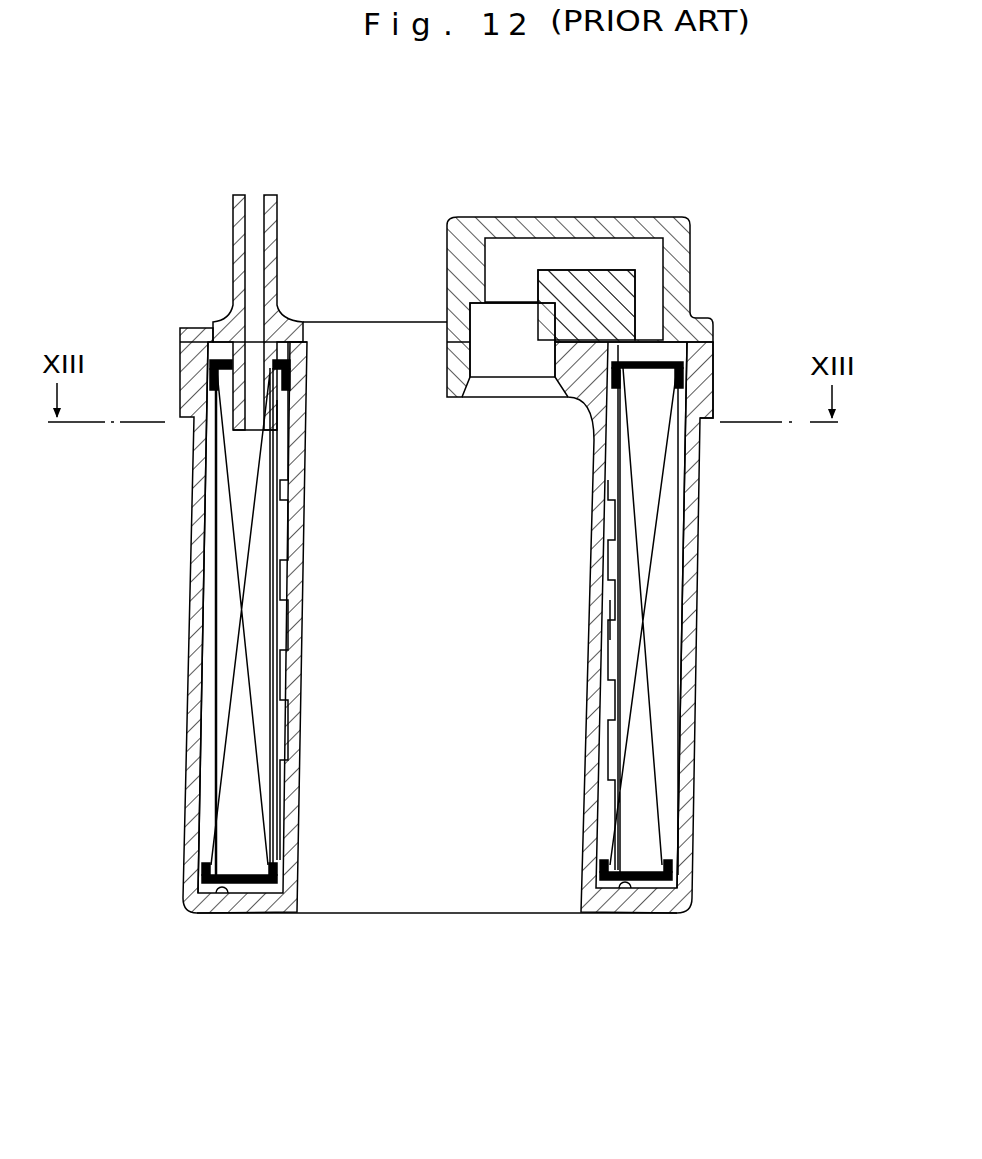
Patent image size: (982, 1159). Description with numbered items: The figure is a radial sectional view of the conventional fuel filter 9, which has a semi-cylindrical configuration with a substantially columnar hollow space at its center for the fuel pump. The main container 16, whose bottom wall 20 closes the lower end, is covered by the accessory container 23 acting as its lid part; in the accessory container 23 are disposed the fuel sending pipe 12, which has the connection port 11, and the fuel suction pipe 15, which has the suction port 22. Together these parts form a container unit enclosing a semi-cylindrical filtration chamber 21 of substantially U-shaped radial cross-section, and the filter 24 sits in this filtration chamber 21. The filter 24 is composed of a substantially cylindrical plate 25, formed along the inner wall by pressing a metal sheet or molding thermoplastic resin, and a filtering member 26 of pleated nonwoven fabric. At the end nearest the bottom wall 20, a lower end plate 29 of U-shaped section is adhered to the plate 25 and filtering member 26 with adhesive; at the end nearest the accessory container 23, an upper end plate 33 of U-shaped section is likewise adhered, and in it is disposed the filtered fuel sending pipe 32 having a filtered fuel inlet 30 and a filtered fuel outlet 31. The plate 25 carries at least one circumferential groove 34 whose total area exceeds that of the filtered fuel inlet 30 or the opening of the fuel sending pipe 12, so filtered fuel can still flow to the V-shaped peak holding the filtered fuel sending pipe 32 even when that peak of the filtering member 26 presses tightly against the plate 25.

The fuel filter 9 is at (148, 752).
The connection port 11 is at (472, 362).
The fuel sending pipe 12 is at (278, 217).
The fuel suction pipe 15 is at (598, 217).
The main container 16 is at (190, 600).
The bottom wall 20 is at (202, 898).
The filtration chamber 21 is at (677, 750).
The suction port 22 is at (640, 320).
The accessory container 23 is at (713, 322).
The filter 24 is at (207, 705).
The plate 25 is at (286, 685).
The filtering member 26 is at (665, 637).
The lower end plate 29 is at (240, 895).
The filtered fuel inlet 30 is at (248, 433).
The filtered fuel outlet 31 is at (275, 360).
The filtered fuel sending pipe 32 is at (212, 385).
The upper end plate 33 is at (225, 365).
The groove 34 is at (600, 620).